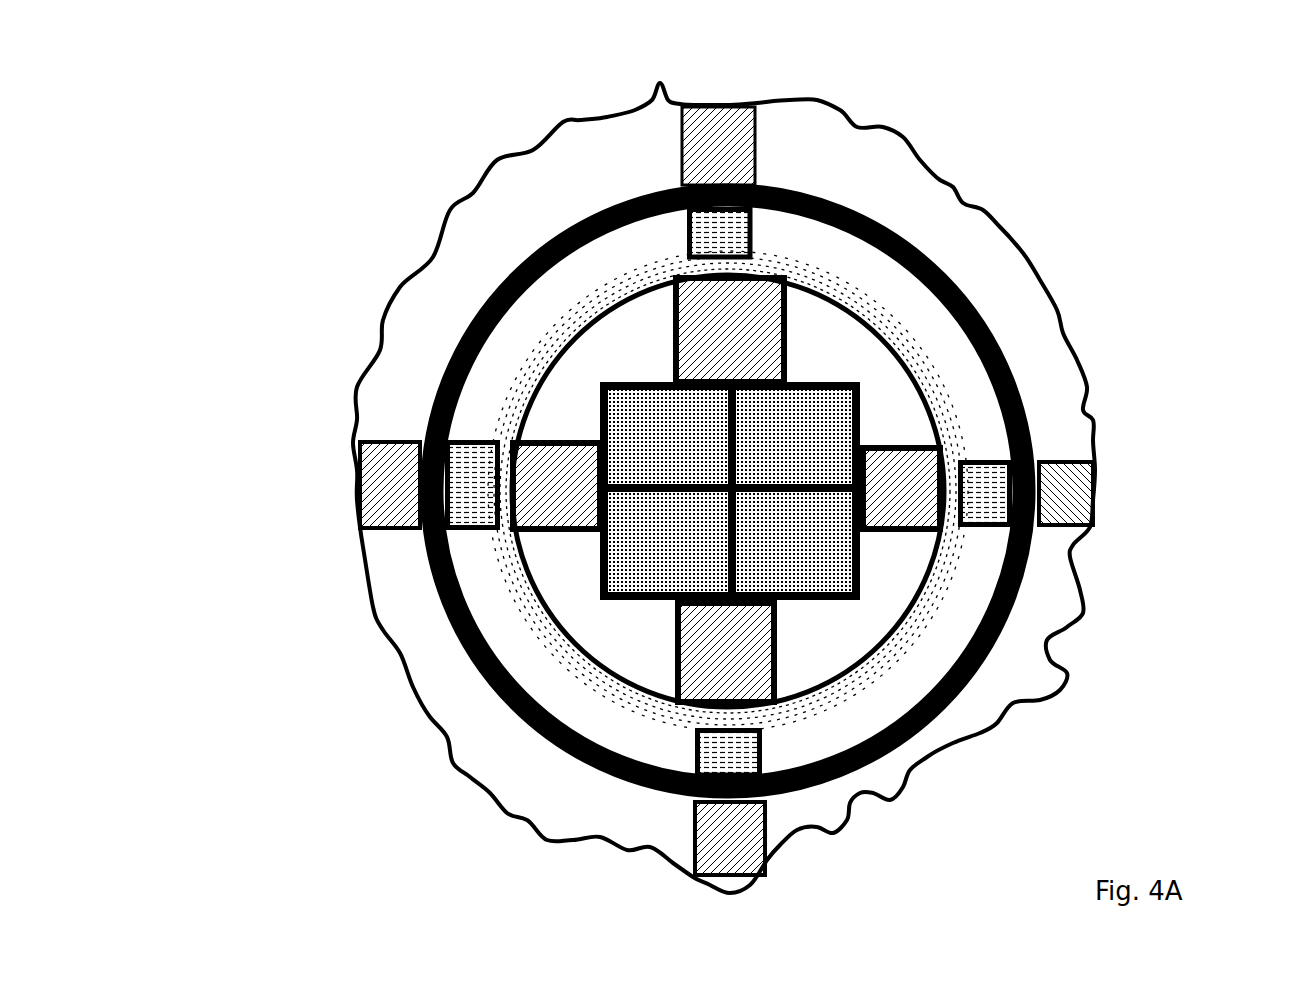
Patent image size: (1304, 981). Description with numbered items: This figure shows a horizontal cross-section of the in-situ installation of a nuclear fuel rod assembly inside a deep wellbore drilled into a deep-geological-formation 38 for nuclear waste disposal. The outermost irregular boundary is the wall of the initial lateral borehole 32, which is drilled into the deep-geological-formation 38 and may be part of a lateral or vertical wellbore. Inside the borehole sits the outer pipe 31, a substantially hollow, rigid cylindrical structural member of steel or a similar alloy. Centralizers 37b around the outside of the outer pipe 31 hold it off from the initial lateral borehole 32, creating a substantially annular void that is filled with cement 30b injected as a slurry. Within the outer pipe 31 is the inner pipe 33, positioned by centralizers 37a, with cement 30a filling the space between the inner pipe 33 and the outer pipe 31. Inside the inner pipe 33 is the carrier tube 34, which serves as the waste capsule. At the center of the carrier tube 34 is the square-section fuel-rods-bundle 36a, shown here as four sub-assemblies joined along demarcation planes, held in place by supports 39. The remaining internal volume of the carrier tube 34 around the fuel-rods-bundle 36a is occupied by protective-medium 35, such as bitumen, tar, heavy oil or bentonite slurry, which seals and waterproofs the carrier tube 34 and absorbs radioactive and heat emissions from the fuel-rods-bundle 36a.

The cement 30a is at (853, 267).
The cement 30b is at (850, 157).
The outer pipe 31 is at (970, 295).
The initial lateral borehole 32 is at (507, 158).
The inner pipe 33 is at (950, 402).
The carrier tube 34 is at (934, 573).
The protective-medium 35 is at (587, 620).
The fuel-rods-bundle 36a is at (597, 383).
The centralizer 37a is at (730, 740).
The centralizer 37b is at (393, 470).
The deep-geological-formation 38 is at (655, 491).
The support 39 is at (540, 512).